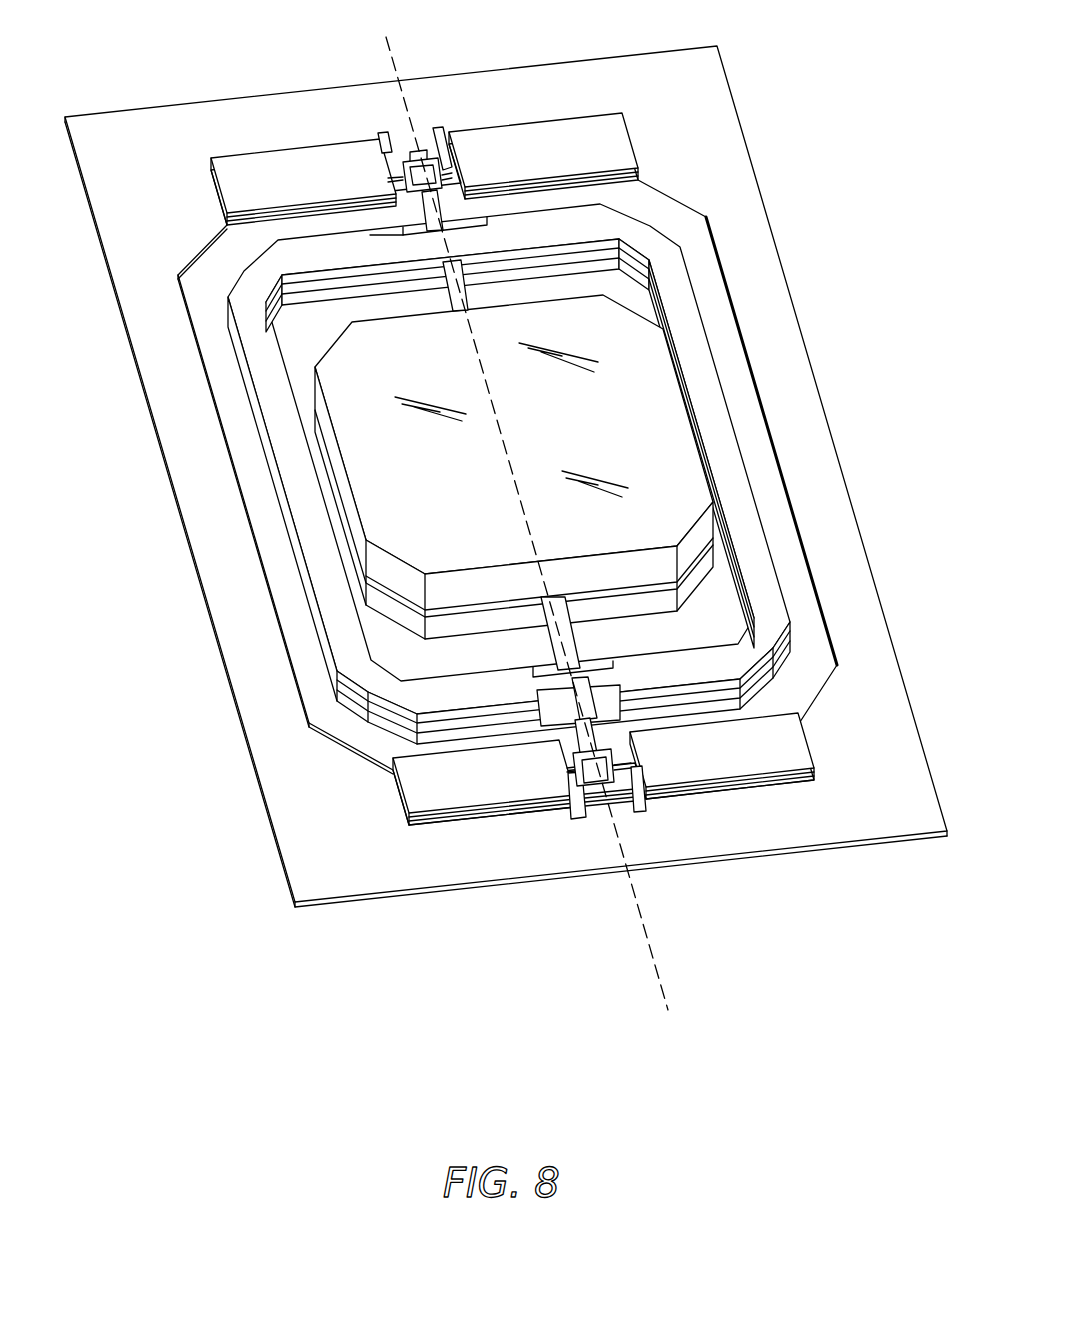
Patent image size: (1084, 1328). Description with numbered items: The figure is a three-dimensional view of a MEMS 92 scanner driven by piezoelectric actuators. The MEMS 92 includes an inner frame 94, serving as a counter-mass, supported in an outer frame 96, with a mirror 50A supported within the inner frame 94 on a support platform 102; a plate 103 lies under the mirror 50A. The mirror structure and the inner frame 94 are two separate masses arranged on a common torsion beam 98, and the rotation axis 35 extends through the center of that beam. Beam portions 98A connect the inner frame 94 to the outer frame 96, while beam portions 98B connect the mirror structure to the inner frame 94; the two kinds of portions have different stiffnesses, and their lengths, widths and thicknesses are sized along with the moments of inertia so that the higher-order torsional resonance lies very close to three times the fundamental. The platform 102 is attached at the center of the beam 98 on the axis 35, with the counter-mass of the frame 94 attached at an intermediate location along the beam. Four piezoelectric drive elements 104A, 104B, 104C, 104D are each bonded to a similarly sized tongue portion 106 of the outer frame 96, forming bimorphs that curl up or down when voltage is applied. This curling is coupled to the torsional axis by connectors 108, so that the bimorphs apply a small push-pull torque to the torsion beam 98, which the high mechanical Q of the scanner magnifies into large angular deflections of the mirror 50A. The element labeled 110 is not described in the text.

The MEMS 92 is at (506, 569).
The outer frame 96 is at (310, 813).
The inner frame 94 is at (340, 627).
The piezoelectric transducer drive-element 104A is at (355, 163).
The piezoelectric transducer drive-element 104B is at (483, 780).
The piezoelectric transducer drive-element 104C is at (617, 150).
The piezoelectric transducer drive-element 104D is at (700, 750).
The tongue portion 106 is at (527, 812).
The support platform 102 is at (690, 585).
The plate 103 is at (362, 598).
The mirror 50A is at (648, 396).
The torsion beam 98 is at (452, 218).
The beam portion 98A is at (437, 207).
The beam portion 98B is at (437, 280).
The connector 108 is at (575, 785).
The mounting block 110 is at (611, 795).
The rotation axis 35 is at (647, 930).